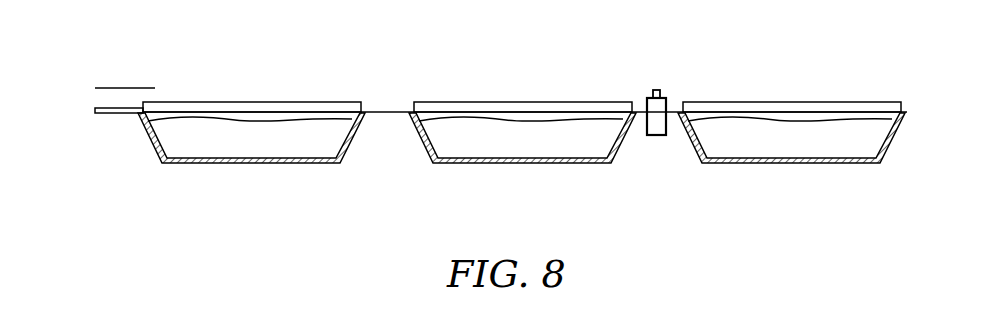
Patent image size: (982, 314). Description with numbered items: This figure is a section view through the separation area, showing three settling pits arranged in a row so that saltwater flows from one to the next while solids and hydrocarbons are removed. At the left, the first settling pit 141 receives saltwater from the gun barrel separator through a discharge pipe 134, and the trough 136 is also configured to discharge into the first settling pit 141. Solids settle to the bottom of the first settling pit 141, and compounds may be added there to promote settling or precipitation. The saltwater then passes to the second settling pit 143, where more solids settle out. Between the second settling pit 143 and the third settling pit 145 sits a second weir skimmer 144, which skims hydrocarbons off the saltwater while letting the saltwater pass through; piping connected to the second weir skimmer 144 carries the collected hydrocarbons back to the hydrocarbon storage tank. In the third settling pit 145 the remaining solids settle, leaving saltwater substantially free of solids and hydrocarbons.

The discharge pipe 134 is at (142, 87).
The trough 136 is at (108, 108).
The first settling pit 141 is at (258, 80).
The second settling pit 143 is at (526, 78).
The second weir skimmer 144 is at (652, 136).
The third settling pit 145 is at (801, 77).